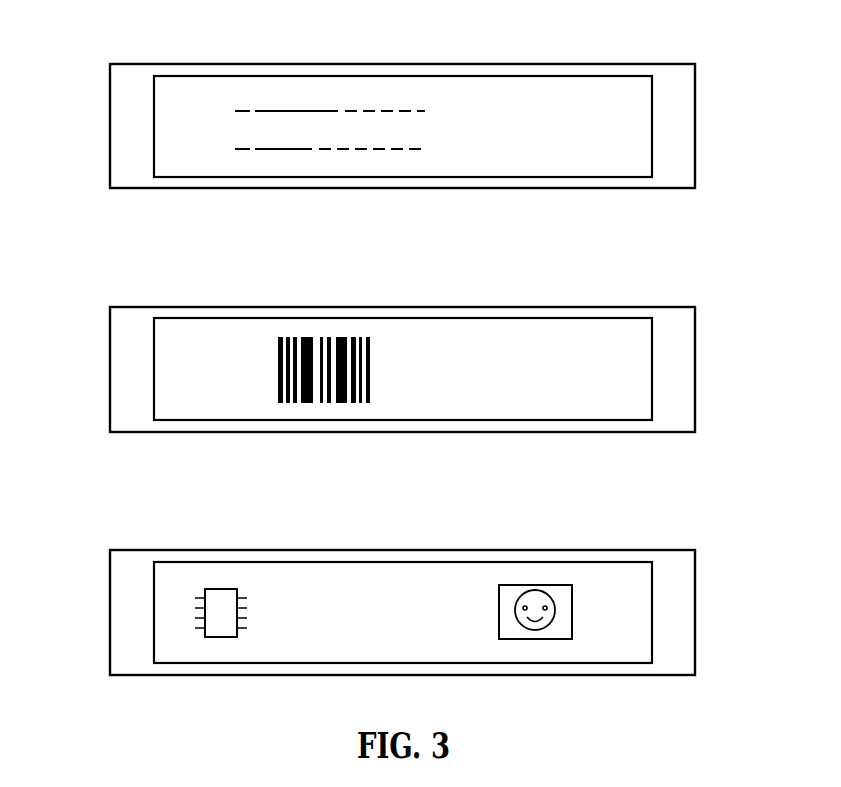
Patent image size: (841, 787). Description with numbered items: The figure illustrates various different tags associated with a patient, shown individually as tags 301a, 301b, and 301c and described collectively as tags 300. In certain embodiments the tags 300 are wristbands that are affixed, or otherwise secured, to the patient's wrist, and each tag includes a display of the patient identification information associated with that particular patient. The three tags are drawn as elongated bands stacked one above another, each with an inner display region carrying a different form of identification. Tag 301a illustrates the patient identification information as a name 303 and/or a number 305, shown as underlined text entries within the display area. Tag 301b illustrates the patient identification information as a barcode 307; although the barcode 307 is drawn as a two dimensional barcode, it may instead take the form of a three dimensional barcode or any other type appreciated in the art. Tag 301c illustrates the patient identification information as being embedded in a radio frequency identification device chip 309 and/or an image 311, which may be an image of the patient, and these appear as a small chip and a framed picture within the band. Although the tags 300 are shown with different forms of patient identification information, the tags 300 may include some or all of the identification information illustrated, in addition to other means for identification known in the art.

The tags 300 is at (698, 37).
The tag 301a is at (110, 100).
The tag 301b is at (110, 340).
The tag 301c is at (110, 582).
The name 303 is at (246, 98).
The number 305 is at (246, 139).
The barcode 307 is at (270, 349).
The radio frequency identification device chip 309 is at (222, 589).
The image 311 is at (521, 585).